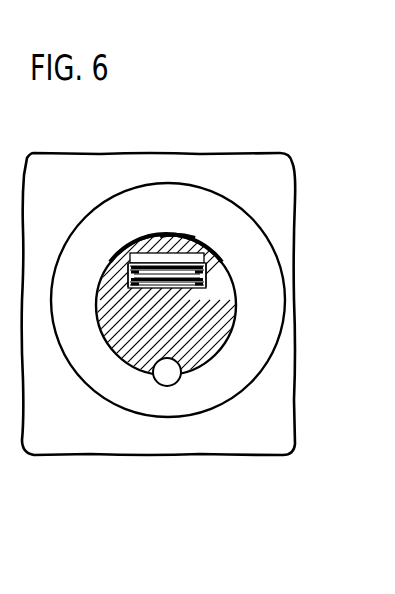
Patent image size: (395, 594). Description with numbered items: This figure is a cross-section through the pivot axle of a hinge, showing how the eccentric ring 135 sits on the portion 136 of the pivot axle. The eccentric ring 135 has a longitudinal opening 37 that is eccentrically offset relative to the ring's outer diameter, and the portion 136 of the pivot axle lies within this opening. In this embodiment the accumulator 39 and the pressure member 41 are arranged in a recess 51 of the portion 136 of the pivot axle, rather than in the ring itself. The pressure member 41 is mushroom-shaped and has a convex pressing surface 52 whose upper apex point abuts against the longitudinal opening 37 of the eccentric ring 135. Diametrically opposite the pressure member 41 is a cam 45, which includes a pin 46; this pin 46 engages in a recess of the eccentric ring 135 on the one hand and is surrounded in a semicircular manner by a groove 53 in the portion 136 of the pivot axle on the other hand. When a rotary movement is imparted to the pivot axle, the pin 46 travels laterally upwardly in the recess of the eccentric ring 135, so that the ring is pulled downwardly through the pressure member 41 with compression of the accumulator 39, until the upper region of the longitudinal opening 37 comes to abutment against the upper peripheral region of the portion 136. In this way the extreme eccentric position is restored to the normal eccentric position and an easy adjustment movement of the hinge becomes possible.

The eccentric ring 135 is at (173, 196).
The longitudinal opening 37 is at (122, 247).
The portion of the pivot axle 136 is at (217, 325).
The pressure member 41 is at (155, 240).
The recess 51 is at (128, 267).
The convex pressing surface 52 is at (189, 237).
The accumulator 39 is at (208, 268).
The pin 46 is at (172, 378).
The groove 53 is at (153, 372).
The cam 45 is at (153, 396).